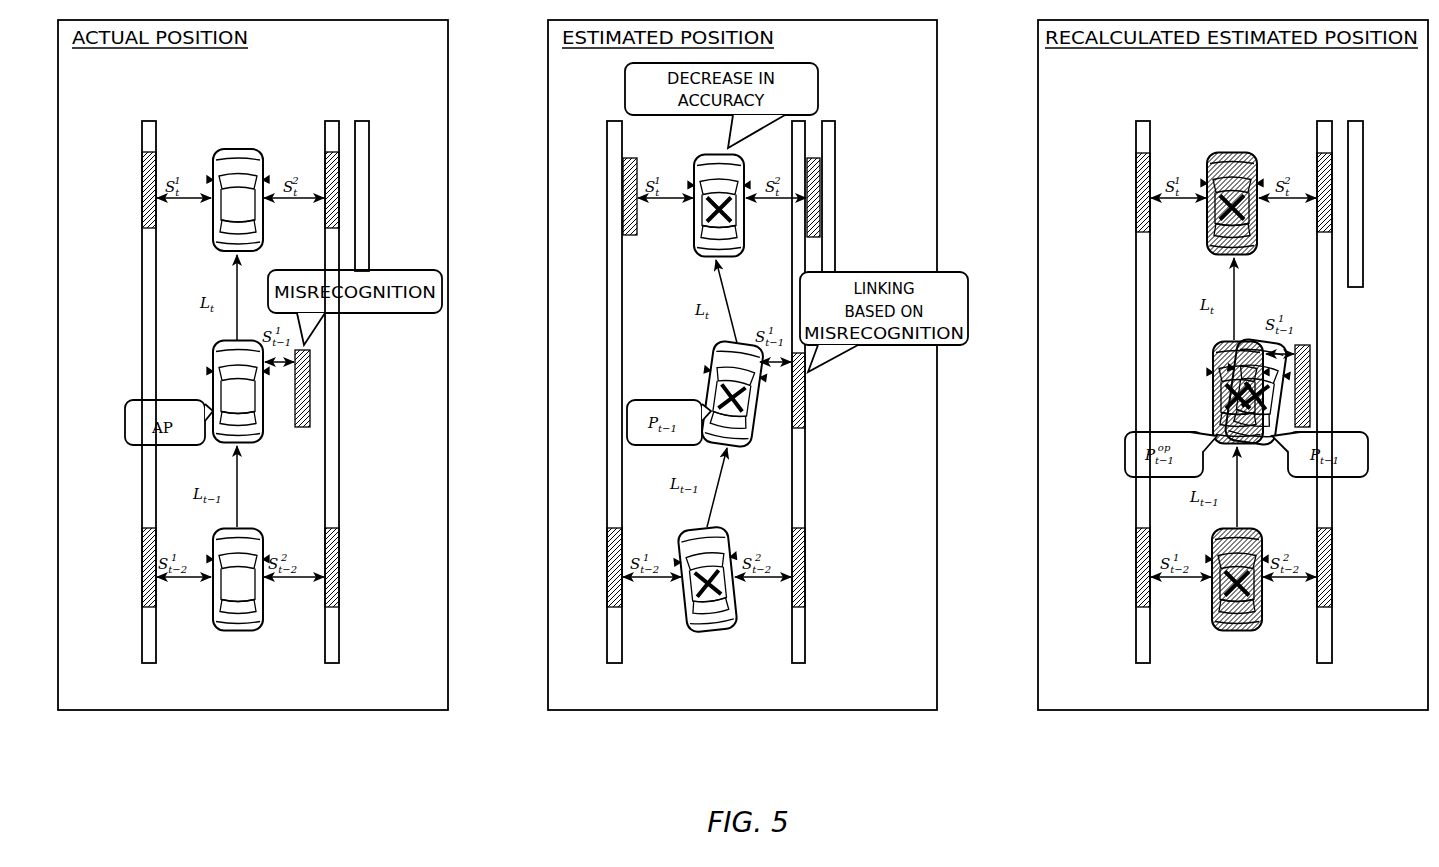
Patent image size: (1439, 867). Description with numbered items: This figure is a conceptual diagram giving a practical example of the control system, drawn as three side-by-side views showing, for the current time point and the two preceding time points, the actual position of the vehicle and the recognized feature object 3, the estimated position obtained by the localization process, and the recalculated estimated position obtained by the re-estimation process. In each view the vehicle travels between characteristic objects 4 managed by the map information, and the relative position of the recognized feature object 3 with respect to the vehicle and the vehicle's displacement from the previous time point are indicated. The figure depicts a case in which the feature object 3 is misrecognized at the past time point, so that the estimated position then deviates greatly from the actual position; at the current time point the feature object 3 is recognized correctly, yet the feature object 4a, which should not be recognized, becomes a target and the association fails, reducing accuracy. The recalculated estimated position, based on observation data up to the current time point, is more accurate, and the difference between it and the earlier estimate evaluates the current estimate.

The recognized feature object 3 is at (142, 152).
The characteristic object 4 is at (149, 664).
The feature object which should not be recognized 4a is at (830, 121).